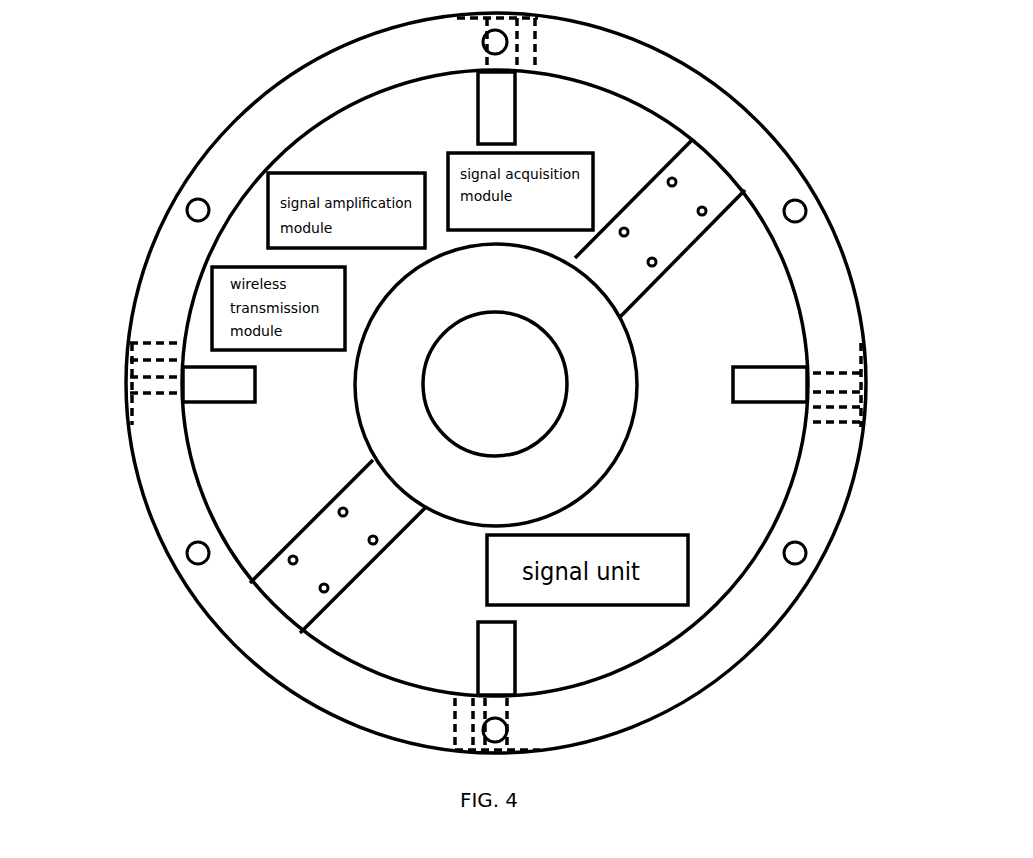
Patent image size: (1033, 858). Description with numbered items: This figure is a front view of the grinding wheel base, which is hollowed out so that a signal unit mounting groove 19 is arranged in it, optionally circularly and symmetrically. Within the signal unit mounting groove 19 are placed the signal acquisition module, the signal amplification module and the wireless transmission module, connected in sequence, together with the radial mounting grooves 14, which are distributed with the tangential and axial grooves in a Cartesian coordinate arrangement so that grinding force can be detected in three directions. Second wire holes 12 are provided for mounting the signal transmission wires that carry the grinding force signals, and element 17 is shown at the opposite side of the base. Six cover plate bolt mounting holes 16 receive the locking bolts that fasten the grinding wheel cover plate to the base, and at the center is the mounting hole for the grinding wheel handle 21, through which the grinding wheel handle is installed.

The second wire hole 12 is at (843, 383).
The radial mounting groove 14 is at (497, 117).
The cover plate bolt mounting hole 16 is at (196, 209).
The left interface connector 17 is at (153, 355).
The signal unit mounting groove 19 is at (686, 301).
The mounting hole for the grinding wheel handle 21 is at (517, 412).